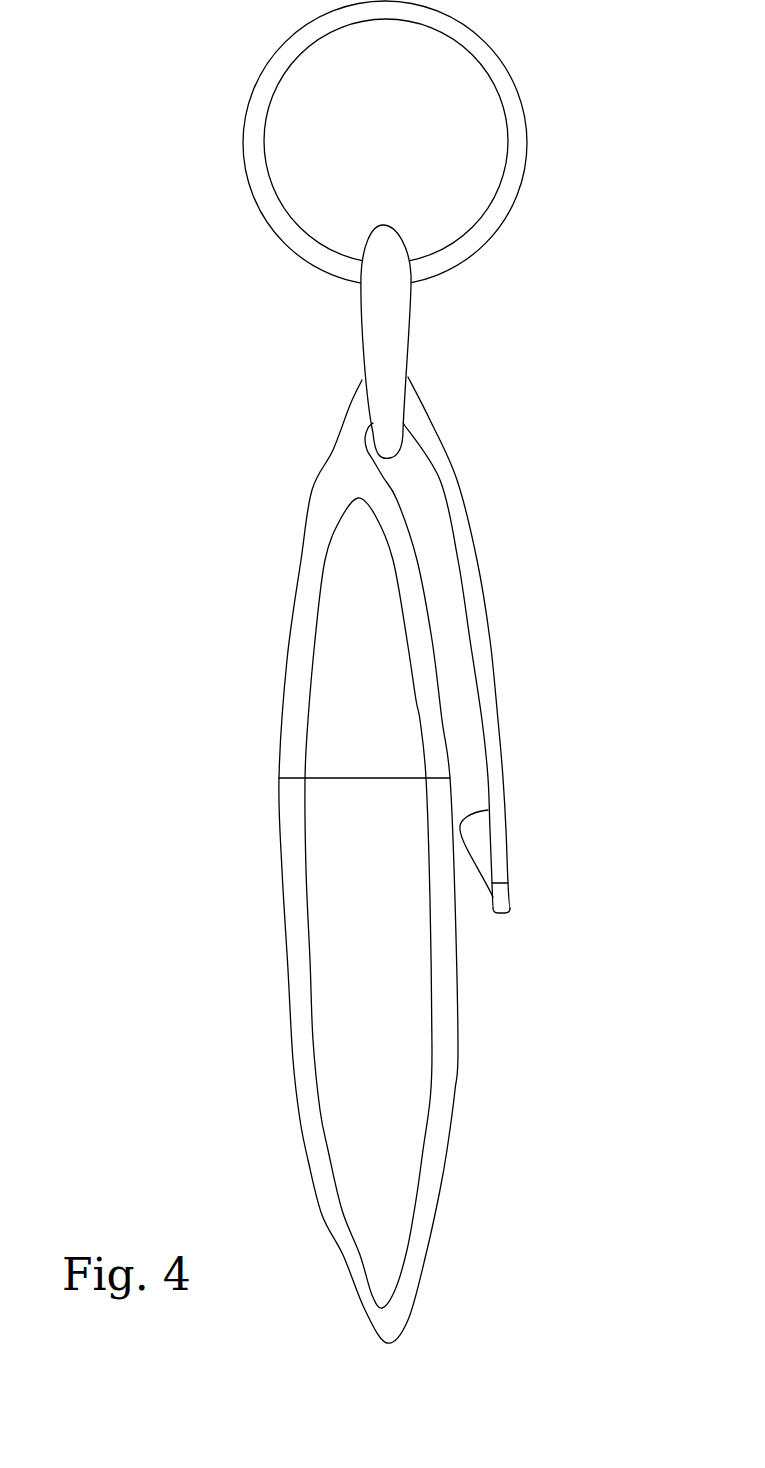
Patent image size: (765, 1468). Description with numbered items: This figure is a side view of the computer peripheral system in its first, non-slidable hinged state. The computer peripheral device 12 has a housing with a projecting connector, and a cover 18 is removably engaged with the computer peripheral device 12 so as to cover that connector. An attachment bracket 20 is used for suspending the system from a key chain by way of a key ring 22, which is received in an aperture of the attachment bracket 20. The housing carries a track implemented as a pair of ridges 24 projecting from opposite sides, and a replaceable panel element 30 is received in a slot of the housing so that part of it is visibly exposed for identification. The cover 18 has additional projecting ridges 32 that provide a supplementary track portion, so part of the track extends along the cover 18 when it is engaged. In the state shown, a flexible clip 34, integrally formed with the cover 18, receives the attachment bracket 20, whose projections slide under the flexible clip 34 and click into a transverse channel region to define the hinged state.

The computer peripheral device 12 is at (370, 860).
The cover 18 is at (340, 707).
The attachment bracket 20 is at (383, 337).
The key ring 22 is at (517, 167).
The ridges 24 is at (295, 928).
The replaceable panel element 30 is at (430, 1112).
The projecting ridges 32 is at (315, 620).
The flexible clip 34 is at (498, 842).